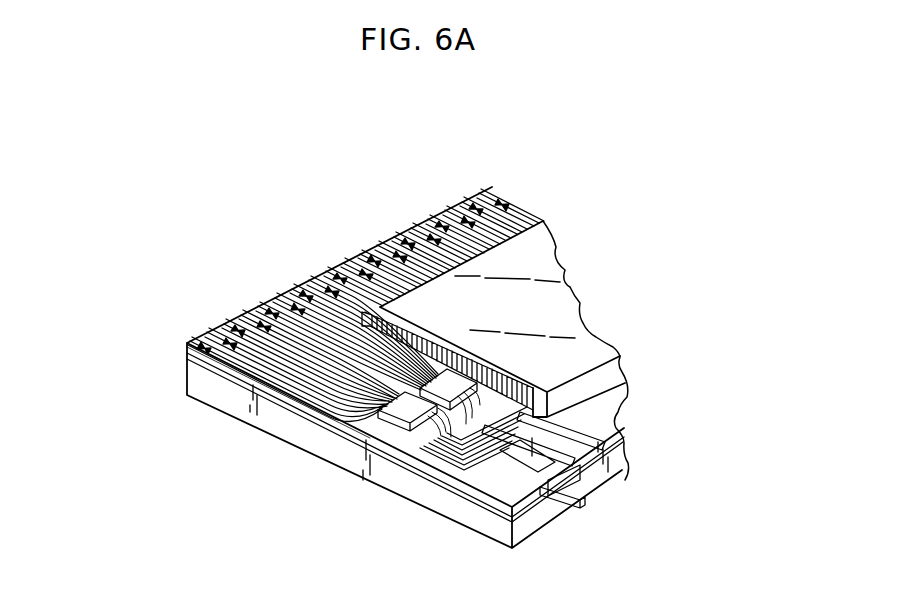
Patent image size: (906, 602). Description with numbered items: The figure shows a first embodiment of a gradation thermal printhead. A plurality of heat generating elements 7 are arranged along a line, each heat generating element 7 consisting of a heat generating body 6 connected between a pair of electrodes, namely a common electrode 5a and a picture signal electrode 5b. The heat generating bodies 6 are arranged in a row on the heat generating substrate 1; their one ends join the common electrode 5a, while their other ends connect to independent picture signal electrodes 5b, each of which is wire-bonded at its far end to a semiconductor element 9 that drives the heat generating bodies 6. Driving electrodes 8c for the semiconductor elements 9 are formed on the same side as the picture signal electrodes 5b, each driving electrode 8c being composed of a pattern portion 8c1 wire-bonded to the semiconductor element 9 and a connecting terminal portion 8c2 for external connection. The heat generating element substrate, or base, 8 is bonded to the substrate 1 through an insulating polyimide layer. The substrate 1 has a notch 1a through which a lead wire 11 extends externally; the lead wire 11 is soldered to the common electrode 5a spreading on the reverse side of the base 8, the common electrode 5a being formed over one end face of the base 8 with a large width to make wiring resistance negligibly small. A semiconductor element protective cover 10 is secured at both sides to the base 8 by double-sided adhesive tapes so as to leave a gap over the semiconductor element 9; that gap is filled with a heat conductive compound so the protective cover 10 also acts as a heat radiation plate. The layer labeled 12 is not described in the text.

The heat generating substrate 1 is at (248, 410).
The notch 1a is at (570, 487).
The common electrode 5a is at (407, 240).
The picture signal electrodes 5b is at (400, 255).
The heat generating body 6 is at (408, 272).
The heat generating elements 7 is at (366, 353).
The base 8 is at (375, 429).
The driving electrodes 8c is at (512, 503).
The pattern portion 8c1 is at (468, 458).
The connecting terminal portion 8c2 is at (536, 460).
The semiconductor element 9 is at (404, 414).
The semiconductor element protective cover 10 is at (543, 261).
The lead wire 11 is at (568, 509).
The top layer 12 is at (197, 367).